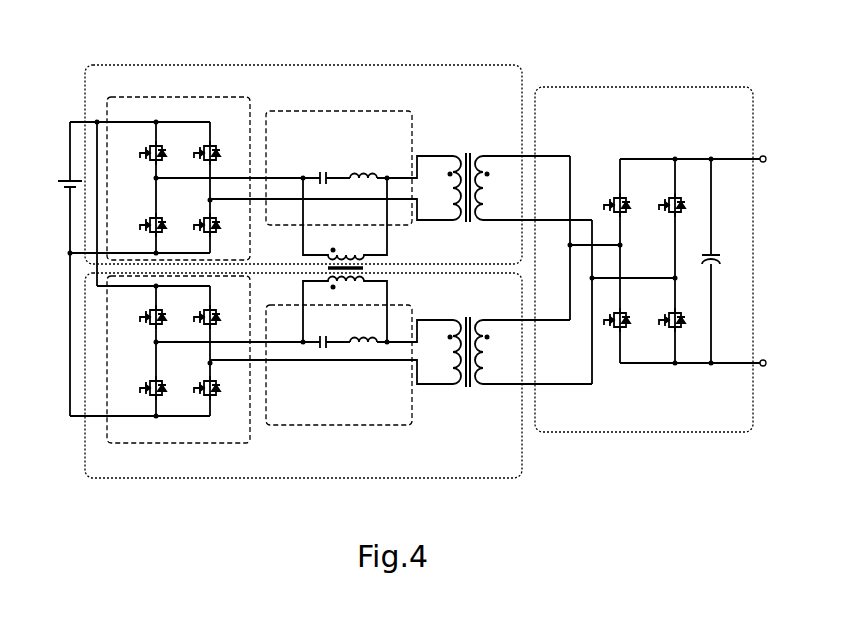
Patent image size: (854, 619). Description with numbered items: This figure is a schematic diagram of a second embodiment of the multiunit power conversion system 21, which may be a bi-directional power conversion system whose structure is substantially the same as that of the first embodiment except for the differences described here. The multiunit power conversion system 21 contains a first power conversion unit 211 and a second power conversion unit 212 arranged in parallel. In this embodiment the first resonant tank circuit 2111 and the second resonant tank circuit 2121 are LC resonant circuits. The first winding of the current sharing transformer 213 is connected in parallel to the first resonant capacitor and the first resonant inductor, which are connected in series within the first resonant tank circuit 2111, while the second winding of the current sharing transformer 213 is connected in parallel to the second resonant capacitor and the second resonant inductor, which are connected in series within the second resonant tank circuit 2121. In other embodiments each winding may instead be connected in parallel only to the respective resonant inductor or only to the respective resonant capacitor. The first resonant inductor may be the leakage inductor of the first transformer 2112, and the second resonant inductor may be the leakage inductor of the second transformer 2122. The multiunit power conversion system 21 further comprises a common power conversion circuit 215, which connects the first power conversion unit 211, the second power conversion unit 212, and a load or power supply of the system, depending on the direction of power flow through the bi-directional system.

The multiunit power conversion system 21 is at (128, 55).
The first power conversion unit 211 is at (290, 240).
The first resonant tank circuit 2111 is at (342, 168).
The first transformer 2112 is at (470, 153).
The second power conversion unit 212 is at (296, 375).
The second resonant tank circuit 2121 is at (341, 365).
The second transformer 2122 is at (463, 386).
The current sharing transformer 213 is at (328, 268).
The common power conversion circuit 215 is at (650, 259).